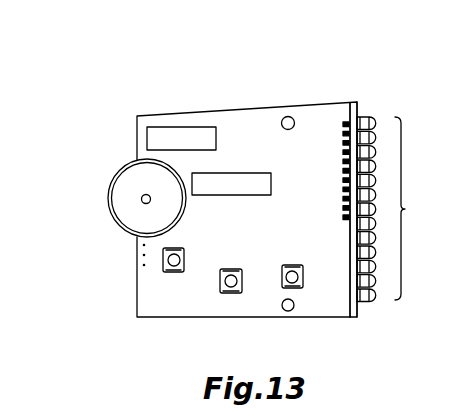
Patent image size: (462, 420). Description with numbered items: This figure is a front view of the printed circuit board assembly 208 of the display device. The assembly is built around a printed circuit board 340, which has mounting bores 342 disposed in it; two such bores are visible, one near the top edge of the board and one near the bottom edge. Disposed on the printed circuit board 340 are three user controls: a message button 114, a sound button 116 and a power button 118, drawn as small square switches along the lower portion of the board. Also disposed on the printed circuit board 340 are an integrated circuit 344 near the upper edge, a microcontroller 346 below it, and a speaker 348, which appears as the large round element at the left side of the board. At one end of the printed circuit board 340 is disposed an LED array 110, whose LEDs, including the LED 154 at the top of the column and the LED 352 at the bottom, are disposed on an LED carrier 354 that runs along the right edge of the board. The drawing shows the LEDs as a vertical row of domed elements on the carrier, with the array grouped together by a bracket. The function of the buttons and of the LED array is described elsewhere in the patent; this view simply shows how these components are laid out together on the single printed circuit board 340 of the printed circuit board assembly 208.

The printed circuit board assembly 208 is at (139, 96).
The printed circuit board 340 is at (319, 104).
The LED carrier 354 is at (359, 107).
The integrated circuit 344 is at (178, 132).
The microcontroller 346 is at (253, 182).
The mounting bores 342 is at (288, 116).
The speaker 348 is at (108, 200).
The message button 114 is at (166, 258).
The sound button 116 is at (226, 281).
The power button 118 is at (304, 278).
The LED 154 is at (377, 124).
The LED array 110 is at (392, 208).
The LED 352 is at (378, 297).